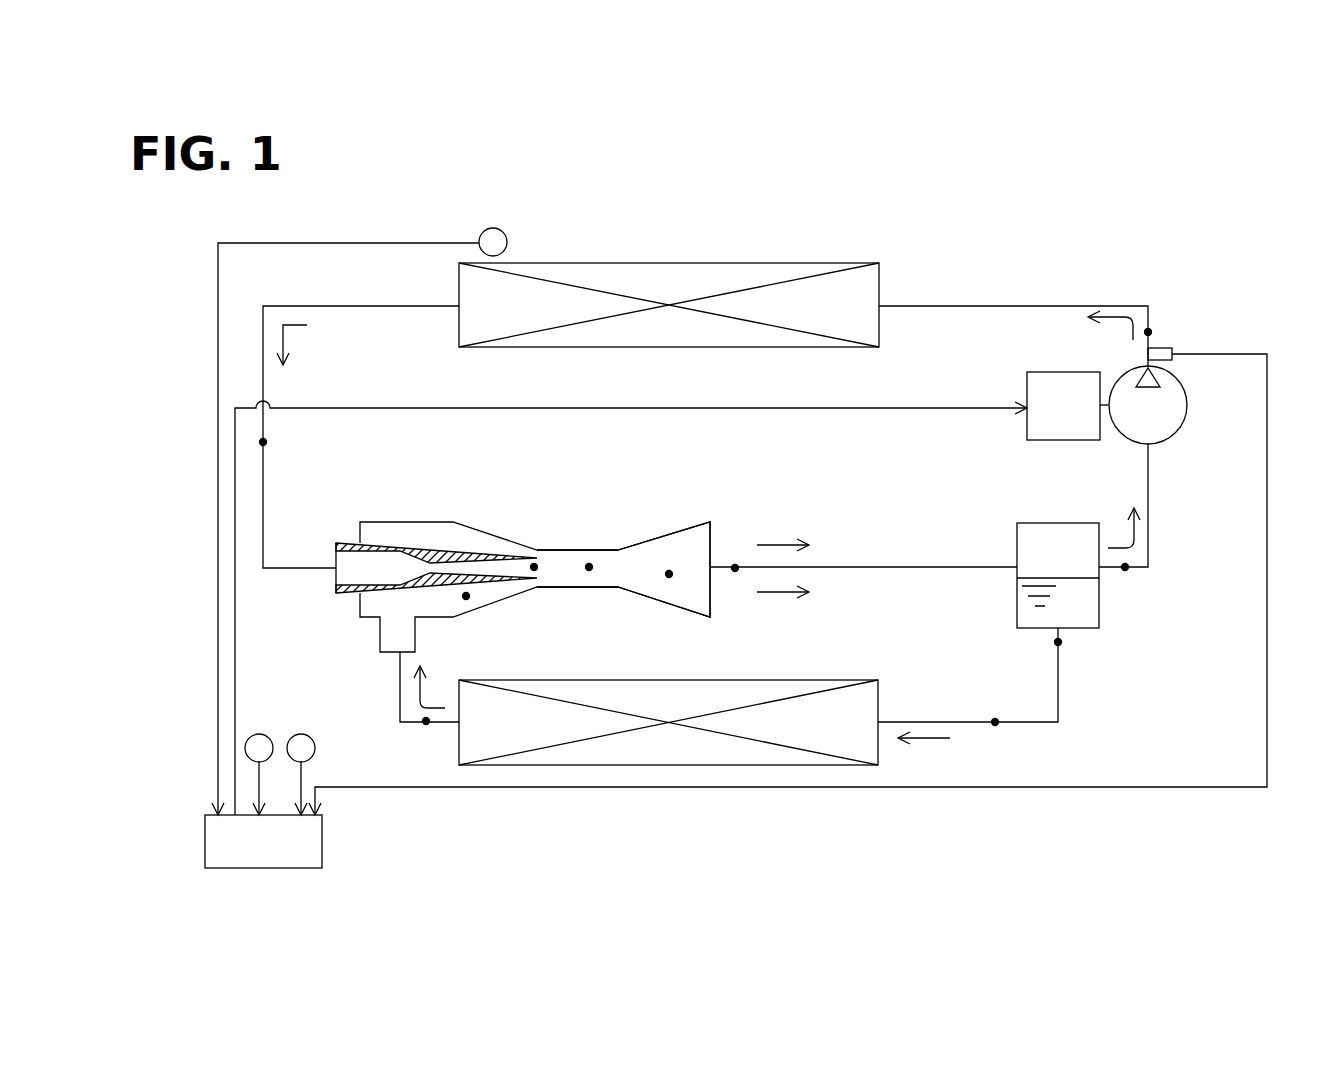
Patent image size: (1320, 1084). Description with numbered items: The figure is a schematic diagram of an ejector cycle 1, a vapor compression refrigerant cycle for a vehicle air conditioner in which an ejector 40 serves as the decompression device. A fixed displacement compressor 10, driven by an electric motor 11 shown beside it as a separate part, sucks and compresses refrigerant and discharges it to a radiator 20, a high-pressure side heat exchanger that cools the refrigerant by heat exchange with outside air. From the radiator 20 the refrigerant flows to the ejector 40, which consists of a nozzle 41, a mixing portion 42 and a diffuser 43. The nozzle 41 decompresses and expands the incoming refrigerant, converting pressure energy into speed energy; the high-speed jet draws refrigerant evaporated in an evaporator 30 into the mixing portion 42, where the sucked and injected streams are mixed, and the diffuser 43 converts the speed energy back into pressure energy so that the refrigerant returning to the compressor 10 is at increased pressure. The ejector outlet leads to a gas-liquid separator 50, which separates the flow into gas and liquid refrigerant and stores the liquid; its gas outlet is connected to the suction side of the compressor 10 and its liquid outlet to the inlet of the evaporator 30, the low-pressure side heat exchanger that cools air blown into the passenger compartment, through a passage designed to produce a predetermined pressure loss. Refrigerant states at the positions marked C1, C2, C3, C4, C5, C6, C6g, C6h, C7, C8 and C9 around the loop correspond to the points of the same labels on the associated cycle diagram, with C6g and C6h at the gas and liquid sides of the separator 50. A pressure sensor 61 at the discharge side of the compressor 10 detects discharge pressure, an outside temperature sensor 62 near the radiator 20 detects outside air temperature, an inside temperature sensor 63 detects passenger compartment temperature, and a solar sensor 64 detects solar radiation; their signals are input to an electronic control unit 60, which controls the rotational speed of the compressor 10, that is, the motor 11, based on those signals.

The ejector cycle 1 is at (385, 300).
The compressor 10 is at (1187, 405).
The electric motor 11 is at (1063, 372).
The radiator 20 is at (802, 263).
The evaporator 30 is at (828, 680).
The ejector 40 is at (510, 540).
The nozzle 41 is at (457, 543).
The mixing portion 42 is at (604, 562).
The diffuser 43 is at (670, 530).
The gas-liquid separator 50 is at (1099, 600).
The electronic control unit 60 is at (322, 843).
The pressure sensor 61 is at (1172, 360).
The outside temperature sensor 62 is at (507, 242).
The inside temperature sensor 63 is at (259, 734).
The solar sensor 64 is at (301, 734).
The refrigerant state position C1 is at (1151, 331).
The refrigerant state position C2 is at (266, 441).
The refrigerant state position C3 is at (535, 570).
The refrigerant state position C4 is at (589, 570).
The refrigerant state position C5 is at (669, 577).
The refrigerant state position C6 is at (735, 571).
The gas refrigerant state position C6g is at (1128, 567).
The liquid refrigerant state position C6h is at (1062, 642).
The refrigerant state position C7 is at (995, 725).
The refrigerant state position C8 is at (425, 724).
The refrigerant state position C9 is at (467, 599).